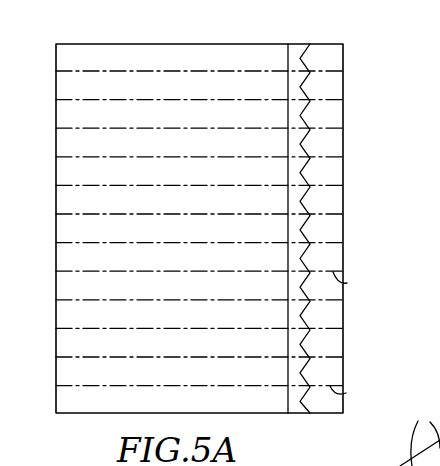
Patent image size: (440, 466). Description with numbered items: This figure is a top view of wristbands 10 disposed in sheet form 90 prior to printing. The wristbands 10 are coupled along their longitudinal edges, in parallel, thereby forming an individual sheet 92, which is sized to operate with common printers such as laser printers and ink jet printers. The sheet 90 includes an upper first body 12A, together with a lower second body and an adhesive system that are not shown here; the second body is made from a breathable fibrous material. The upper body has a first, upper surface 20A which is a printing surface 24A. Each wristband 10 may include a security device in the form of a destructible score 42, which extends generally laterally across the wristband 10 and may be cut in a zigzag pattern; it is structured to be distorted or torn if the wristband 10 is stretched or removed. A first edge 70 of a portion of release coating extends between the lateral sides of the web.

The upper first body 12A is at (93, 48).
The first, upper surface 20A is at (64, 84).
The printing surface 24A is at (68, 114).
The wristband 10 is at (332, 54).
The destructible score 42 is at (305, 90).
The individual sheet 92 is at (343, 343).
The first edge 70 is at (346, 283).
The sheet form 90 is at (358, 238).